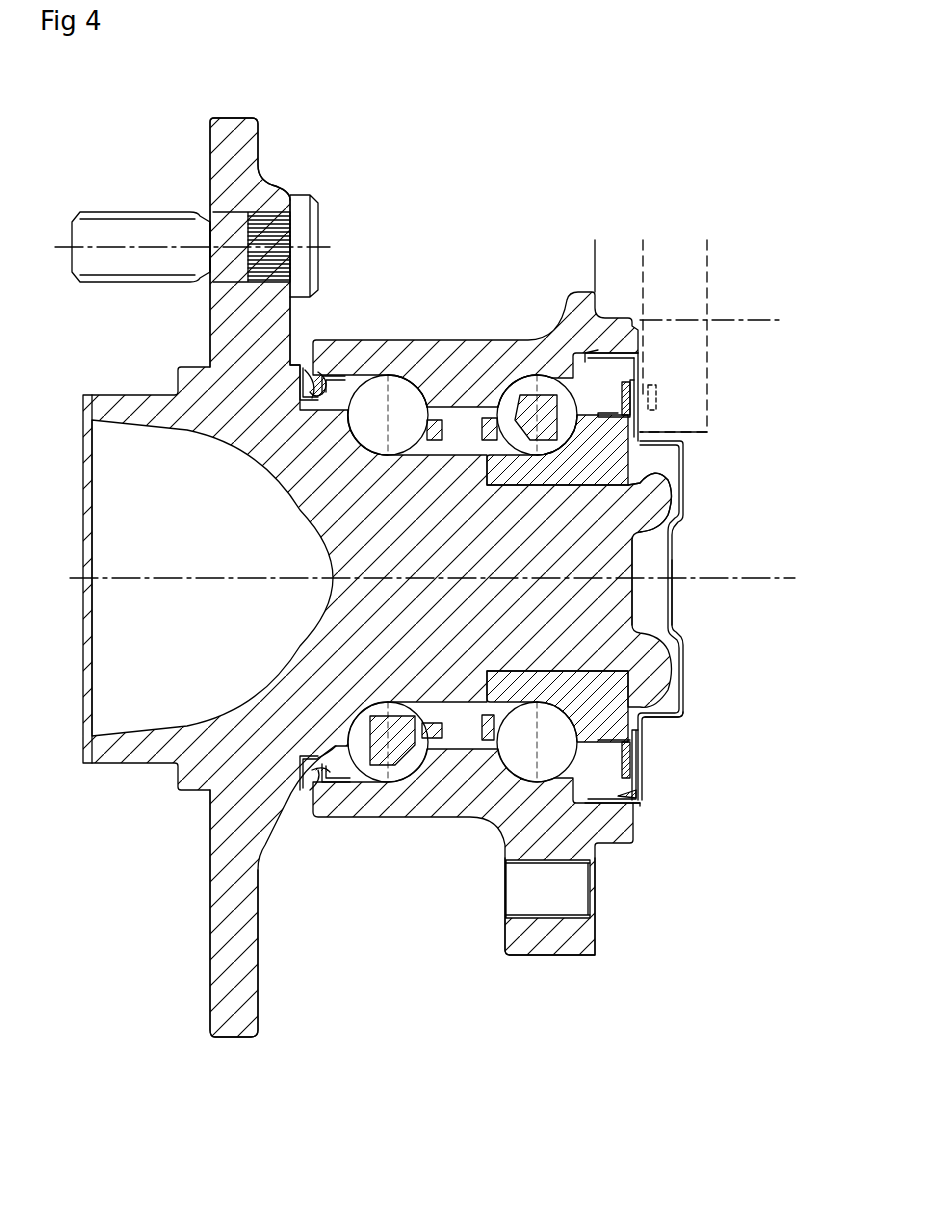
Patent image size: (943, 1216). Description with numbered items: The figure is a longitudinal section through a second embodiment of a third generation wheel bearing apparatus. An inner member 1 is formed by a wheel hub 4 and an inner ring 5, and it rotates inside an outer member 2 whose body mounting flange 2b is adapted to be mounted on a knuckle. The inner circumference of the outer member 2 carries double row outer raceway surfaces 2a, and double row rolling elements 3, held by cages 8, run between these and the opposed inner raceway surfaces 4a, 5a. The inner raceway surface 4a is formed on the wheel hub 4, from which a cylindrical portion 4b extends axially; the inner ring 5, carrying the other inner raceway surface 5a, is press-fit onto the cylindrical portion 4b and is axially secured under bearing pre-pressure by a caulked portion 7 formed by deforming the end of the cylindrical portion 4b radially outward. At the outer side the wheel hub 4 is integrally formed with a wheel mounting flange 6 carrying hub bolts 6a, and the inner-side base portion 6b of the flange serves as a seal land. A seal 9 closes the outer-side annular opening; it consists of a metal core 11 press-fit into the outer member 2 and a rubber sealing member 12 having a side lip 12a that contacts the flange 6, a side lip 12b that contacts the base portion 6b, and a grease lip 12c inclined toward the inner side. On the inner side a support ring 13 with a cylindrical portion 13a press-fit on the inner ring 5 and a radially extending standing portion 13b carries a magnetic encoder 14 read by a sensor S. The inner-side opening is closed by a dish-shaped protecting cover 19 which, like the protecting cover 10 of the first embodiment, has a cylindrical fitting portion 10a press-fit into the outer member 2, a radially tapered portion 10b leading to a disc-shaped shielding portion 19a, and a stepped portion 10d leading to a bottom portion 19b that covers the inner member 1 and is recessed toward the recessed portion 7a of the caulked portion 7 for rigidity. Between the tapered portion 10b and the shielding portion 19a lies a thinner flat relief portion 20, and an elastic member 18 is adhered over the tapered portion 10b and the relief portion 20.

The inner member 1 is at (213, 443).
The outer member 2 is at (445, 345).
The outer raceway surface 2a is at (395, 400).
The body mounting flange 2b is at (548, 940).
The rolling elements (balls) 3 is at (470, 832).
The wheel hub 4 is at (283, 660).
The inner raceway surface 4a is at (395, 430).
The cylindrical portion 4b is at (560, 470).
The inner ring 5 is at (618, 446).
The inner raceway surface 5a is at (505, 470).
The wheel mounting flange 6 is at (232, 140).
The hub bolt 6a is at (122, 230).
The base portion 6b is at (305, 365).
The caulked portion 7 is at (640, 465).
The recessed portion 7a is at (650, 548).
The cage 8 is at (472, 700).
The seal 9 is at (62, 833).
The protecting cover 10 is at (322, 383).
The cylindrical fitting portion 10a is at (590, 355).
The radially tapered portion 10b is at (638, 362).
The cylindrical or stepped portion 10d is at (670, 728).
The metal core 11 is at (335, 790).
The sealing member 12 is at (103, 790).
The side lip 12a is at (310, 785).
The side lip 12b is at (320, 770).
The grease lip 12c is at (330, 748).
The support ring 13 is at (730, 752).
The cylindrical portion 13a is at (645, 745).
The standing portion 13b is at (640, 770).
The magnetic encoder 14 is at (640, 800).
The elastic member 18 is at (638, 810).
The protecting cover 19 is at (690, 488).
The shielding portion 19a is at (640, 434).
The bottom portion 19b is at (672, 595).
The flat relief portion 20 is at (655, 392).
The sensor S is at (677, 290).